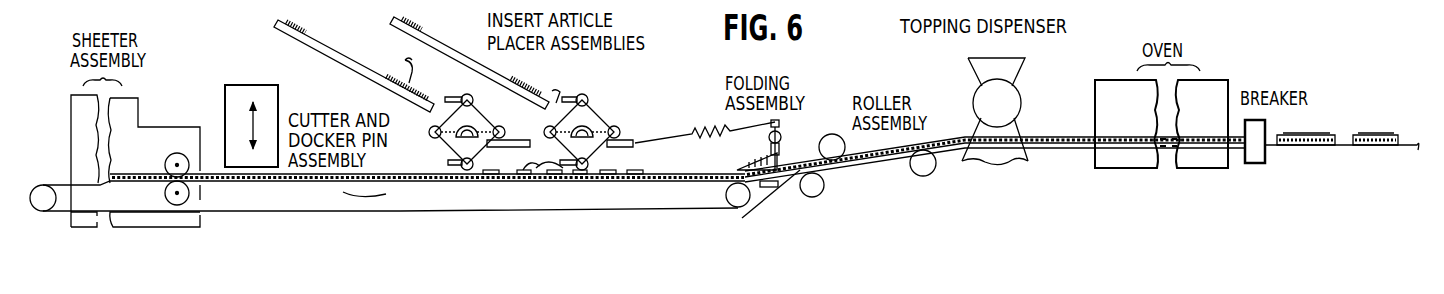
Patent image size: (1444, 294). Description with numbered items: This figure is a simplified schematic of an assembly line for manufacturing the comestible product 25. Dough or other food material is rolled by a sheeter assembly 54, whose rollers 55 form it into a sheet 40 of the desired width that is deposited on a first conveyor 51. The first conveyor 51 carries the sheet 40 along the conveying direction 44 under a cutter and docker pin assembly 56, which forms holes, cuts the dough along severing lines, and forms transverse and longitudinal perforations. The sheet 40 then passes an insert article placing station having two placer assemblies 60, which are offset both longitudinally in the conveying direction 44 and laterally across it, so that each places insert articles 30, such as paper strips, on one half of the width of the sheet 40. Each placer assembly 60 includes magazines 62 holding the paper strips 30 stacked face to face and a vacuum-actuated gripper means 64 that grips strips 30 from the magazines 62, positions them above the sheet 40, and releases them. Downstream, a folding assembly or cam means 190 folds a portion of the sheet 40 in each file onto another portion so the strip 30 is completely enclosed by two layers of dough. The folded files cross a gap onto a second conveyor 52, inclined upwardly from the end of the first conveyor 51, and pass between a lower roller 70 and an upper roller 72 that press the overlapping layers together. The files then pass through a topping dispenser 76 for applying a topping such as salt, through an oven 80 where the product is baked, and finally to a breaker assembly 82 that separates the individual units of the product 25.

The comestible product 25 is at (1331, 131).
The insert article (paper strip) 30 is at (303, 27).
The food material sheet 40 is at (216, 171).
The conveying direction 44 is at (345, 192).
The first conveyor 51 is at (57, 178).
The second conveyor 52 is at (780, 201).
The sheeter assembly 54 is at (157, 118).
The rollers 55 is at (170, 156).
The cutter and docker pin assembly 56 is at (256, 82).
The insert article placer assembly 60 is at (450, 88).
The magazine 62 is at (367, 80).
The vacuum-actuated gripper means 64 is at (492, 107).
The lower roller 70 is at (824, 183).
The upper roller 72 is at (832, 133).
The topping dispenser 76 is at (971, 88).
The oven 80 is at (1219, 80).
The breaker assembly 82 is at (1278, 120).
The folding assembly (cam means) 190 is at (747, 156).